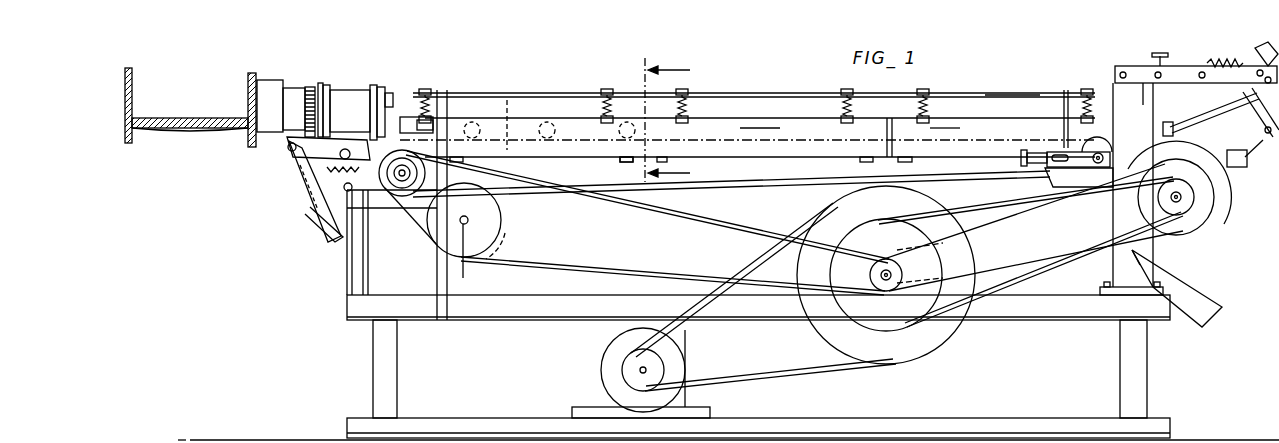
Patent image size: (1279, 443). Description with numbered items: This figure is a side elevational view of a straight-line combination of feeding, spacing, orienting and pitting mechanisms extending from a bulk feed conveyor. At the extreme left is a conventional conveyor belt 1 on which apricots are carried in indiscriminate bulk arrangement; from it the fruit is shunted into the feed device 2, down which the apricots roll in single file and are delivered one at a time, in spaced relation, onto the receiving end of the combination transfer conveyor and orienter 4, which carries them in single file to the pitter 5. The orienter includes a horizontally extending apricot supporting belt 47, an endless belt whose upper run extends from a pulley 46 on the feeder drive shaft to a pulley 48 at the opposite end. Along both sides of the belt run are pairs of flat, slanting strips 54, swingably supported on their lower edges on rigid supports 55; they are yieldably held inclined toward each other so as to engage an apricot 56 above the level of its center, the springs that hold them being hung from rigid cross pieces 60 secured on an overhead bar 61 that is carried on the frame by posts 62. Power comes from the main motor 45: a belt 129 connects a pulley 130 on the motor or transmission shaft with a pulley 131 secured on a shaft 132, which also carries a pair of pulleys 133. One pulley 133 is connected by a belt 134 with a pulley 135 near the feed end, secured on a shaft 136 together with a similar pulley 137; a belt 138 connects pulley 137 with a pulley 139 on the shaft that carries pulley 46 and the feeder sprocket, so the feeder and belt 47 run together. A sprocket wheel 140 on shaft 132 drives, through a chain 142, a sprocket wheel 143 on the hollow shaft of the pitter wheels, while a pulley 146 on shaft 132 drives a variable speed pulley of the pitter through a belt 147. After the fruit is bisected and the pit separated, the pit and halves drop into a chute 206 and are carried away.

The conveyor belt 1 is at (188, 108).
The feed device 2 is at (343, 89).
The combination transfer conveyor and orienter 4 is at (774, 61).
The pitter 5 is at (1243, 160).
The main motor 45 is at (682, 360).
The pulley 46 is at (396, 147).
The apricot supporting belt 47 is at (507, 127).
The pulley 48 is at (1080, 140).
The strips 54 is at (763, 128).
The rigid supports 55 is at (620, 161).
The apricot 56 is at (557, 128).
The rigid cross pieces 60 is at (923, 90).
The overhead bar 61 is at (1000, 93).
The posts 62 is at (447, 107).
The belt 129 is at (790, 376).
The pulley 130 is at (620, 368).
The pulley 131 is at (917, 350).
The shaft 132 is at (886, 292).
The pulleys 133 is at (880, 285).
The belt 134 is at (700, 231).
The pulley 135 is at (490, 210).
The shaft 136 is at (472, 260).
The pulley 137 is at (493, 237).
The belt 138 is at (407, 223).
The pulley 139 is at (455, 171).
The sprocket wheel 140 is at (886, 260).
The chain 142 is at (1010, 260).
The sprocket wheel 143 is at (1195, 213).
The pulley 146 is at (847, 240).
The belt 147 is at (1028, 272).
The chute 206 is at (1198, 312).